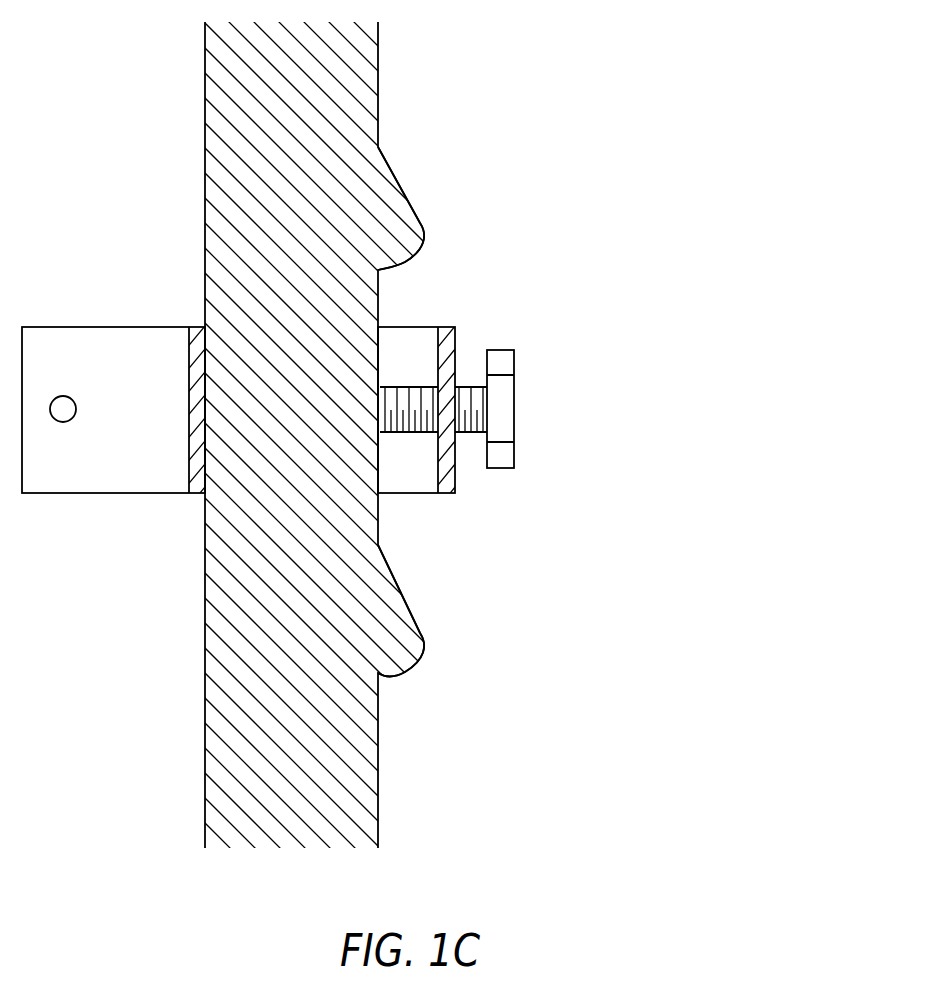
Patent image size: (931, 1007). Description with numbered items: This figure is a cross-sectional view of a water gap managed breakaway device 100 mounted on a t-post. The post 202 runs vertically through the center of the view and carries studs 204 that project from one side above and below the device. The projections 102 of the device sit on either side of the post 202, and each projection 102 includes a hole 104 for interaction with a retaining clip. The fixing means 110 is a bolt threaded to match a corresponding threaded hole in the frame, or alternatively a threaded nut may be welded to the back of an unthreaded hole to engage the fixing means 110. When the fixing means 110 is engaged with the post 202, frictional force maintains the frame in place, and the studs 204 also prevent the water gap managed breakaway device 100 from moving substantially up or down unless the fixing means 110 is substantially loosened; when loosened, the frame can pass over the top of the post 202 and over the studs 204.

The water gap managed breakaway device 100 is at (556, 311).
The projection 102 is at (136, 342).
The hole 104 is at (62, 412).
The fixing means 110 is at (507, 425).
The post 202 is at (372, 85).
The studs 204 is at (425, 225).